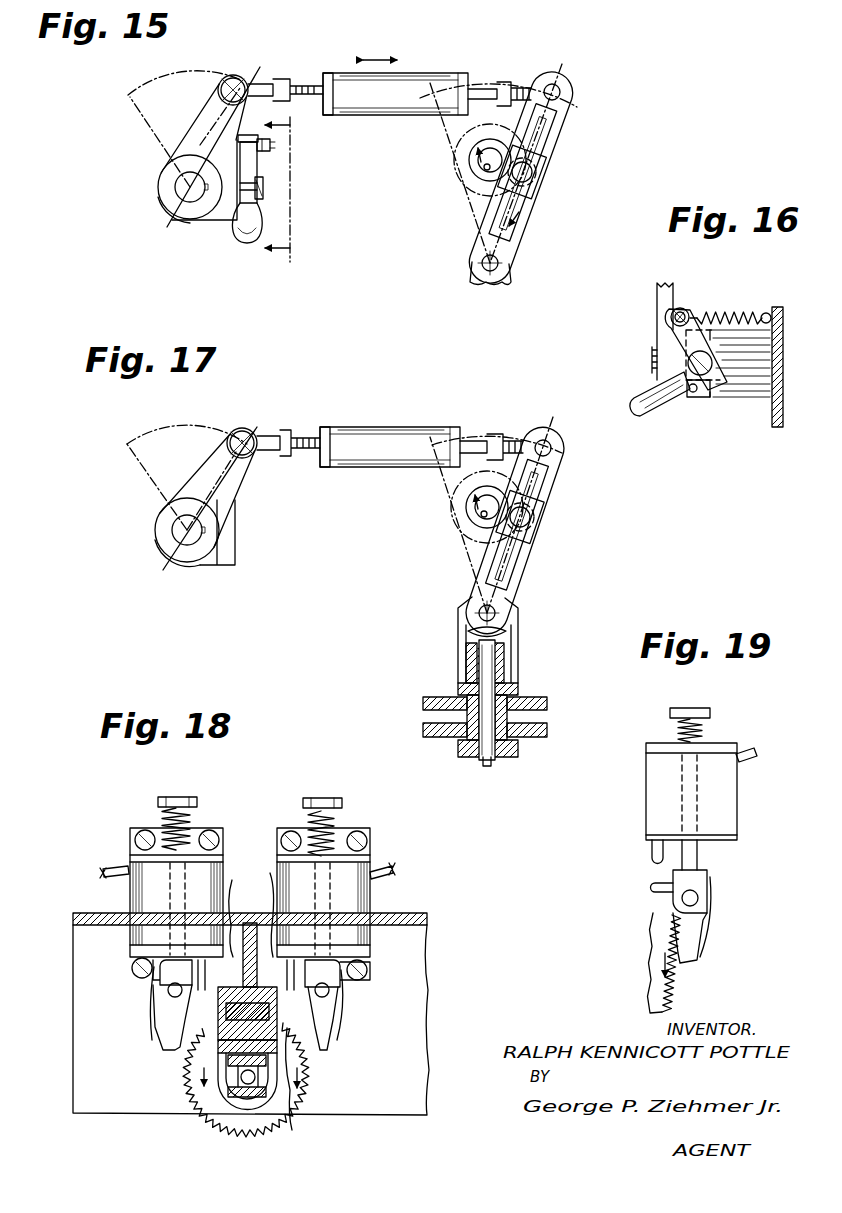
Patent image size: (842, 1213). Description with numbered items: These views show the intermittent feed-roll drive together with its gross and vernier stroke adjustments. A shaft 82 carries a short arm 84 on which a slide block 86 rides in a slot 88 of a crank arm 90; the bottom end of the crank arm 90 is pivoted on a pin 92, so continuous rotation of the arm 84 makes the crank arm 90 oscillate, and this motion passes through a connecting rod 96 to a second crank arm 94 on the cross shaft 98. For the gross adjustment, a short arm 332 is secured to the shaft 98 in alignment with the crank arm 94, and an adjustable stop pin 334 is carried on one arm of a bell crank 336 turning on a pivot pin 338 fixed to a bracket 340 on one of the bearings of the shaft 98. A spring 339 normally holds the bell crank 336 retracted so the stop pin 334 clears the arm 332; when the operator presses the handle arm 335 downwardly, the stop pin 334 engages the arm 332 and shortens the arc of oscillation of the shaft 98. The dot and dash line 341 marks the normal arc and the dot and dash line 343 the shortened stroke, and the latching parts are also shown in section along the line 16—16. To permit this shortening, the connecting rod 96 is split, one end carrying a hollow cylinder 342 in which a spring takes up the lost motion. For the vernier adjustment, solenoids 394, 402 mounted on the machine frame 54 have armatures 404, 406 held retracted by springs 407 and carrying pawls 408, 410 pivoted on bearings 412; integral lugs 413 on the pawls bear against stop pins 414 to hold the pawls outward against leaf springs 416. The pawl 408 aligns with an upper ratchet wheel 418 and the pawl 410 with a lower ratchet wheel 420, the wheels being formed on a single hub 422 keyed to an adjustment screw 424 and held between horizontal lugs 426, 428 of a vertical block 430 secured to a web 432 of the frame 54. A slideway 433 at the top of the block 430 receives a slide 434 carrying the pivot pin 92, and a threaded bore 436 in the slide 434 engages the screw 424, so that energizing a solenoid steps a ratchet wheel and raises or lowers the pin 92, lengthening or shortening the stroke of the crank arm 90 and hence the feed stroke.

In FIG. 15, the section line 16 is at (296, 190).
In FIG. 16, the machine frame 54 is at (773, 412).
In FIG. 18, the machine frame 54 is at (88, 919).
In FIG. 15, the shaft 82 is at (489, 162).
In FIG. 17, the shaft 82 is at (485, 509).
In FIG. 15, the short arm 84 is at (547, 187).
In FIG. 17, the short arm 84 is at (540, 517).
In FIG. 15, the slide block 86 is at (535, 168).
In FIG. 17, the slide block 86 is at (493, 530).
In FIG. 15, the slot 88 is at (517, 222).
In FIG. 15, the crank arm 90 is at (563, 137).
In FIG. 17, the crank arm 90 is at (555, 487).
In FIG. 15, the pivot pin 92 is at (500, 263).
In FIG. 17, the pivot pin 92 is at (497, 612).
In FIG. 15, the second crank arm 94 is at (201, 122).
In FIG. 17, the second crank arm 94 is at (208, 470).
In FIG. 15, the connecting rod 96 is at (408, 87).
In FIG. 17, the connecting rod 96 is at (386, 441).
In FIG. 15, the cross shaft 98 is at (182, 202).
In FIG. 16, the cross shaft 98 is at (654, 360).
In FIG. 17, the cross shaft 98 is at (174, 545).
In FIG. 15, the short arm 332 is at (213, 114).
In FIG. 15, the adjustable stop pin 334 is at (274, 147).
In FIG. 16, the adjustable stop pin 334 is at (683, 310).
In FIG. 15, the handle arm 335 is at (259, 227).
In FIG. 16, the handle arm 335 is at (631, 391).
In FIG. 15, the bell crank 336 is at (250, 170).
In FIG. 16, the bell crank 336 is at (683, 335).
In FIG. 15, the pivot pin 338 is at (264, 193).
In FIG. 16, the pivot pin 338 is at (709, 361).
In FIG. 16, the spring 339 is at (741, 314).
In FIG. 15, the bracket 340 is at (225, 210).
In FIG. 16, the bracket 340 is at (704, 395).
In FIG. 17, the bracket 340 is at (228, 551).
In FIG. 15, the dot and dash line 341 is at (254, 102).
In FIG. 17, the dot and dash line 341 is at (247, 428).
In FIG. 15, the hollow cylinder 342 is at (347, 80).
In FIG. 17, the hollow cylinder 342 is at (344, 430).
In FIG. 15, the dot and dash line 343 is at (244, 76).
In FIG. 18, the solenoid 394 is at (132, 892).
In FIG. 18, the solenoid 402 is at (365, 890).
In FIG. 19, the solenoid 402 is at (723, 812).
In FIG. 18, the armature 404 is at (183, 791).
In FIG. 18, the armature 406 is at (327, 791).
In FIG. 19, the armature 406 is at (711, 712).
In FIG. 18, the springs 407 is at (193, 818).
In FIG. 19, the springs 407 is at (704, 733).
In FIG. 18, the pawl 408 is at (157, 1028).
In FIG. 18, the pawl 410 is at (336, 1023).
In FIG. 19, the pawl 410 is at (690, 933).
In FIG. 18, the bearings 412 is at (137, 972).
In FIG. 19, the bearings 412 is at (692, 878).
In FIG. 18, the lugs 413 is at (202, 992).
In FIG. 19, the lugs 413 is at (651, 888).
In FIG. 18, the stop pins 414 is at (232, 912).
In FIG. 19, the stop pins 414 is at (653, 855).
In FIG. 18, the leaf springs 416 is at (153, 998).
In FIG. 19, the leaf springs 416 is at (707, 917).
In FIG. 17, the upper ratchet wheel 418 is at (437, 703).
In FIG. 18, the upper ratchet wheel 418 is at (195, 1099).
In FIG. 17, the lower ratchet wheel 420 is at (433, 733).
In FIG. 18, the lower ratchet wheel 420 is at (306, 1100).
In FIG. 19, the lower ratchet wheel 420 is at (663, 947).
In FIG. 17, the hub 422 is at (503, 717).
In FIG. 17, the adjustment screw 424 is at (490, 762).
In FIG. 17, the horizontal lug 426 is at (470, 756).
In FIG. 17, the horizontal lug 428 is at (512, 690).
In FIG. 17, the vertical block 430 is at (512, 667).
In FIG. 18, the vertical block 430 is at (320, 1052).
In FIG. 18, the web 432 is at (249, 923).
In FIG. 17, the slideway 433 is at (519, 632).
In FIG. 18, the slideway 433 is at (216, 1053).
In FIG. 17, the slide 434 is at (470, 647).
In FIG. 17, the internally threaded bore 436 is at (478, 673).